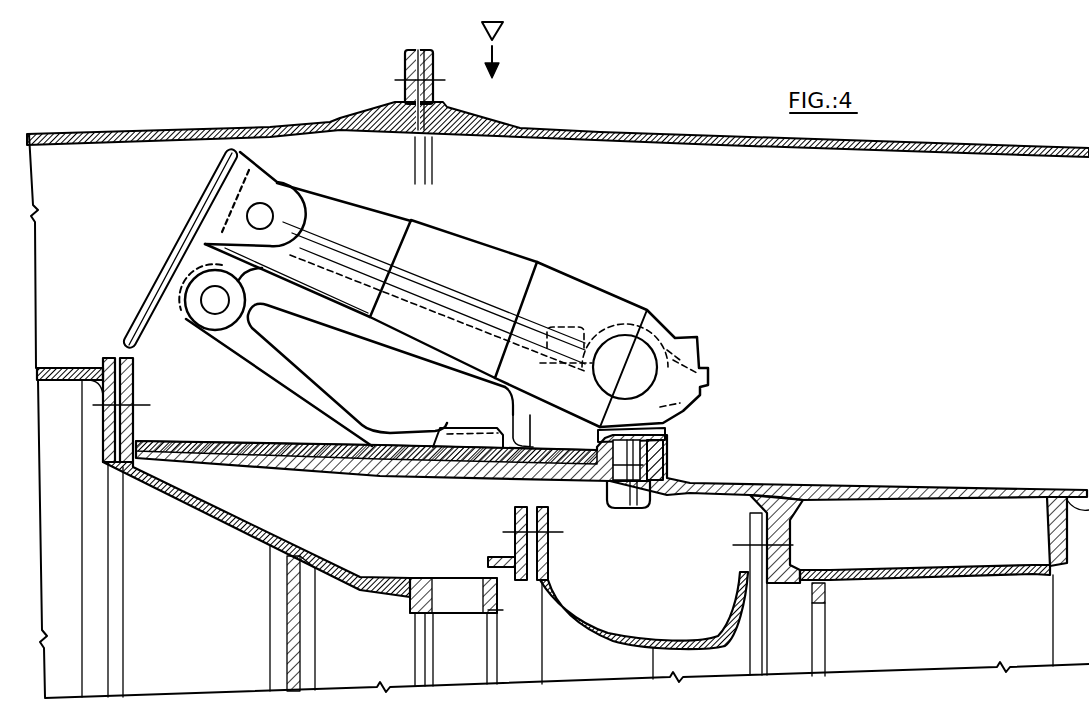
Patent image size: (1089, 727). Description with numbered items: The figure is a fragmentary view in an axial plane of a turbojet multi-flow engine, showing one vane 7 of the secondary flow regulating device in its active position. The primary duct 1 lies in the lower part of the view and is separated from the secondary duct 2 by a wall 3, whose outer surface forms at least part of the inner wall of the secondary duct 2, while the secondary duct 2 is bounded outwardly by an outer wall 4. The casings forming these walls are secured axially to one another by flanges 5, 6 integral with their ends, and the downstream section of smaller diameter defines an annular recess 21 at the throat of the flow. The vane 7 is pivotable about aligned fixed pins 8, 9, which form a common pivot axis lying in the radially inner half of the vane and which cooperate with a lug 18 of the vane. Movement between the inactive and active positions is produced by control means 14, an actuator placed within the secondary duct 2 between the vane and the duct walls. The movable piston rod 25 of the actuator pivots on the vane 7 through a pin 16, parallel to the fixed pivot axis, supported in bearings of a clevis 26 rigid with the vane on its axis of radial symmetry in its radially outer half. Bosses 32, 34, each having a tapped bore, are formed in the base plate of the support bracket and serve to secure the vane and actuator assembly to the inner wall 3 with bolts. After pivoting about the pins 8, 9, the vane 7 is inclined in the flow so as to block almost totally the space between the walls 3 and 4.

The primary duct 1 is at (72, 577).
The secondary duct 2 is at (99, 255).
The wall 3 is at (50, 380).
The outer wall 4 is at (135, 131).
The flange 5 is at (107, 392).
The flange 6 is at (427, 48).
The vane 7 is at (170, 268).
The pin 8 is at (202, 335).
The pin 9 is at (223, 326).
The control means 14 is at (472, 236).
The pin 16 is at (267, 203).
The lug 18 is at (171, 312).
The annular recess 21 is at (232, 413).
The piston rod 25 is at (327, 212).
The clevis 26 is at (222, 203).
The boss 32 is at (449, 427).
The boss 34 is at (665, 459).